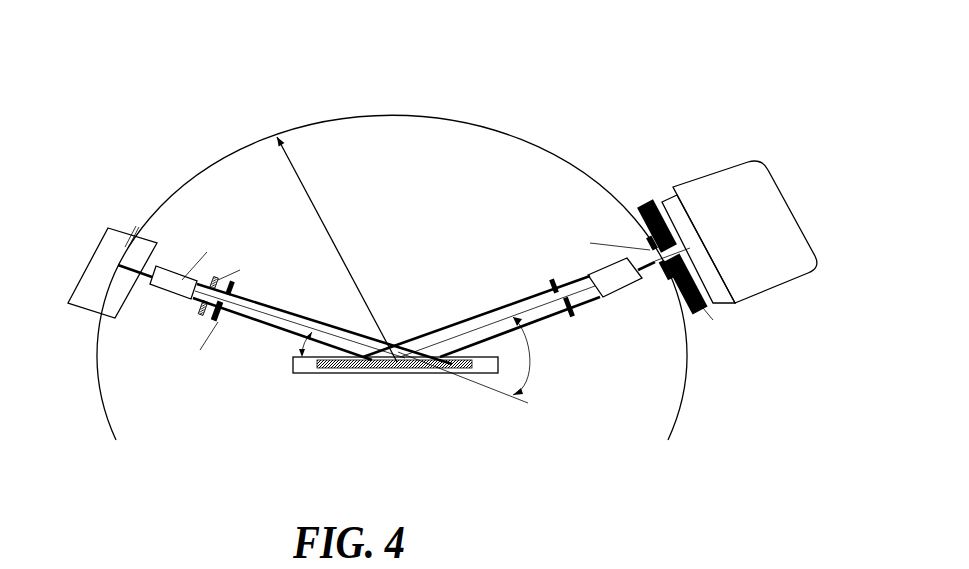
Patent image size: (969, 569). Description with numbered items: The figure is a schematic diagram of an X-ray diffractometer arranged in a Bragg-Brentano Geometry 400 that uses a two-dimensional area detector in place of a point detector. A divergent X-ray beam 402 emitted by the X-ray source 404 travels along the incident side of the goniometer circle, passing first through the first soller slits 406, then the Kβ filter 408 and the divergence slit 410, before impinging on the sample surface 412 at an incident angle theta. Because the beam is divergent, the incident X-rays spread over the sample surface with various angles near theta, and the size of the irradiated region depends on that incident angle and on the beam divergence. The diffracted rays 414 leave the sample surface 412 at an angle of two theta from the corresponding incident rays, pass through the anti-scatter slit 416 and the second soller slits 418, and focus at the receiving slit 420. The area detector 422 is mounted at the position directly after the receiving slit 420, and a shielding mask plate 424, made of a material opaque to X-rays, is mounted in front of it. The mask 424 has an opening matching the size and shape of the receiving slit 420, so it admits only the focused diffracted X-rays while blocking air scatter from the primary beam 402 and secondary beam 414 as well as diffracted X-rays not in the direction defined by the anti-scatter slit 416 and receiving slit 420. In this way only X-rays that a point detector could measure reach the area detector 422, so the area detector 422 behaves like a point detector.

The Bragg-Brentano Geometry 400 is at (474, 98).
The divergent X-ray beam 402 is at (270, 323).
The X-ray source 404 is at (88, 293).
The soller slits 1 406 is at (180, 287).
The Kβ filter 408 is at (200, 312).
The divergence slit 410 is at (234, 288).
The sample surface 412 is at (320, 367).
The diffracted rays 414 is at (473, 332).
The anti-scatter slit 416 is at (550, 282).
The soller slits 2 418 is at (610, 280).
The receiving slit 420 is at (580, 251).
The area detector 422 is at (773, 272).
The shielding mask plate 424 is at (648, 205).